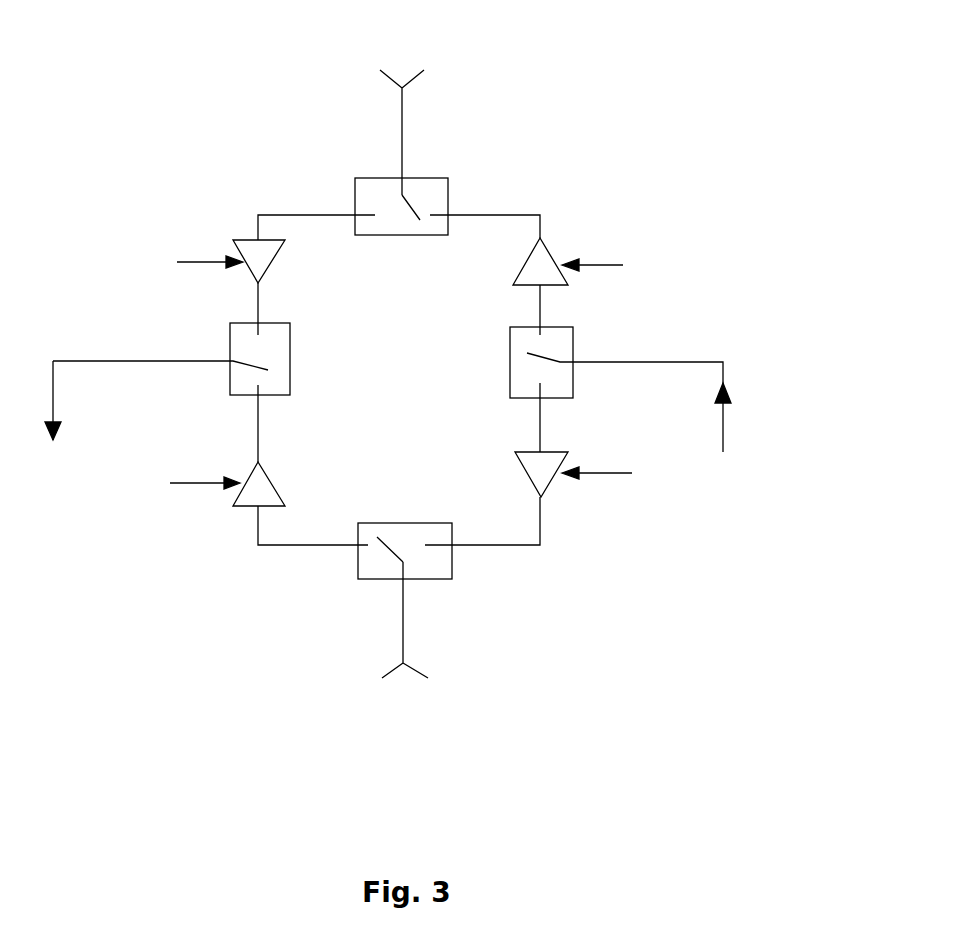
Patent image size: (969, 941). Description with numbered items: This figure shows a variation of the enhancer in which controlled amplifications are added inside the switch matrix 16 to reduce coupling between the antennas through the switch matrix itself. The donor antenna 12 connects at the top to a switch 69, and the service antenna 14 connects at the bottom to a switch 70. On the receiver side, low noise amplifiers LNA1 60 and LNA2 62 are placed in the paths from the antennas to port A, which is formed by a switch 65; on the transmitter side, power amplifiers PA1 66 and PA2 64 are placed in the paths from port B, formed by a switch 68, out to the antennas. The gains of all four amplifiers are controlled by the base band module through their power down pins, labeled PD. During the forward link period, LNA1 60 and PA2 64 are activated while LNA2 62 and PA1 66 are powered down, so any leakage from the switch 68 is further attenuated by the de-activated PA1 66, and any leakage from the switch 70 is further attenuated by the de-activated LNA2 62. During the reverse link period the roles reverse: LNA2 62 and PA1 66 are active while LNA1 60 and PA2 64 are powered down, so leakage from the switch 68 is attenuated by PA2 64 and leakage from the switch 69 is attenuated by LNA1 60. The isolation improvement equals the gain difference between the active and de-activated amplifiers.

The donor antenna 12 is at (375, 88).
The service antenna 14 is at (490, 723).
The switch matrix 16 is at (682, 163).
The low noise amplifier LNA1 60 is at (228, 228).
The low noise amplifier LNA2 62 is at (230, 508).
The power amplifier PA2 64 is at (555, 490).
The switch 65 is at (222, 387).
The power amplifier PA1 66 is at (547, 235).
The switch 68 is at (578, 387).
The switch 69 is at (347, 175).
The switch 70 is at (350, 578).